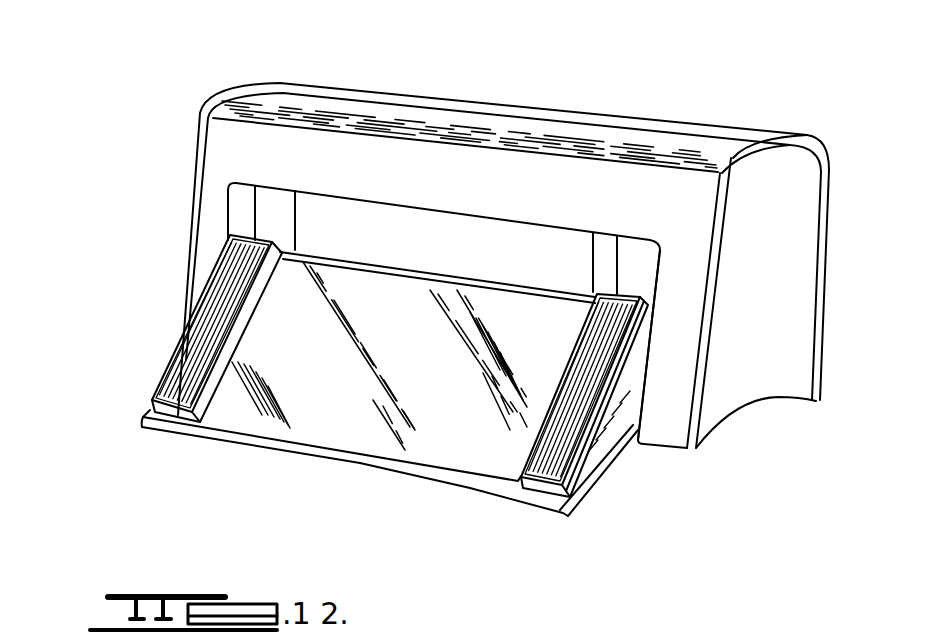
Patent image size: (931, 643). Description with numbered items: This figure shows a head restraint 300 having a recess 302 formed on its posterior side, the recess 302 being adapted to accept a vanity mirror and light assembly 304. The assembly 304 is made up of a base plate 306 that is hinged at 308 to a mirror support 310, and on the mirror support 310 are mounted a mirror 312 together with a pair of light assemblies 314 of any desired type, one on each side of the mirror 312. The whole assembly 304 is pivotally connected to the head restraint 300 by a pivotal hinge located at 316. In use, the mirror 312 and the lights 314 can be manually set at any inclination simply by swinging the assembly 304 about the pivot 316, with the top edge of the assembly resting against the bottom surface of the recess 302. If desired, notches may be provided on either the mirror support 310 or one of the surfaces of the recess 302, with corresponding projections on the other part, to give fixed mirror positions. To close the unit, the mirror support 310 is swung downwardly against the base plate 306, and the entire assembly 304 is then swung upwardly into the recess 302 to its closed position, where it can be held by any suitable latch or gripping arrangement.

The head restraint 300 is at (566, 132).
The recess 302 is at (434, 214).
The vanity mirror and light assembly 304 is at (262, 452).
The base plate 306 is at (603, 452).
The hinge 308 is at (361, 465).
The mirror support 310 is at (620, 372).
The mirror 312 is at (436, 453).
The light assemblies 314 is at (180, 359).
The pivotal hinge 316 is at (617, 415).